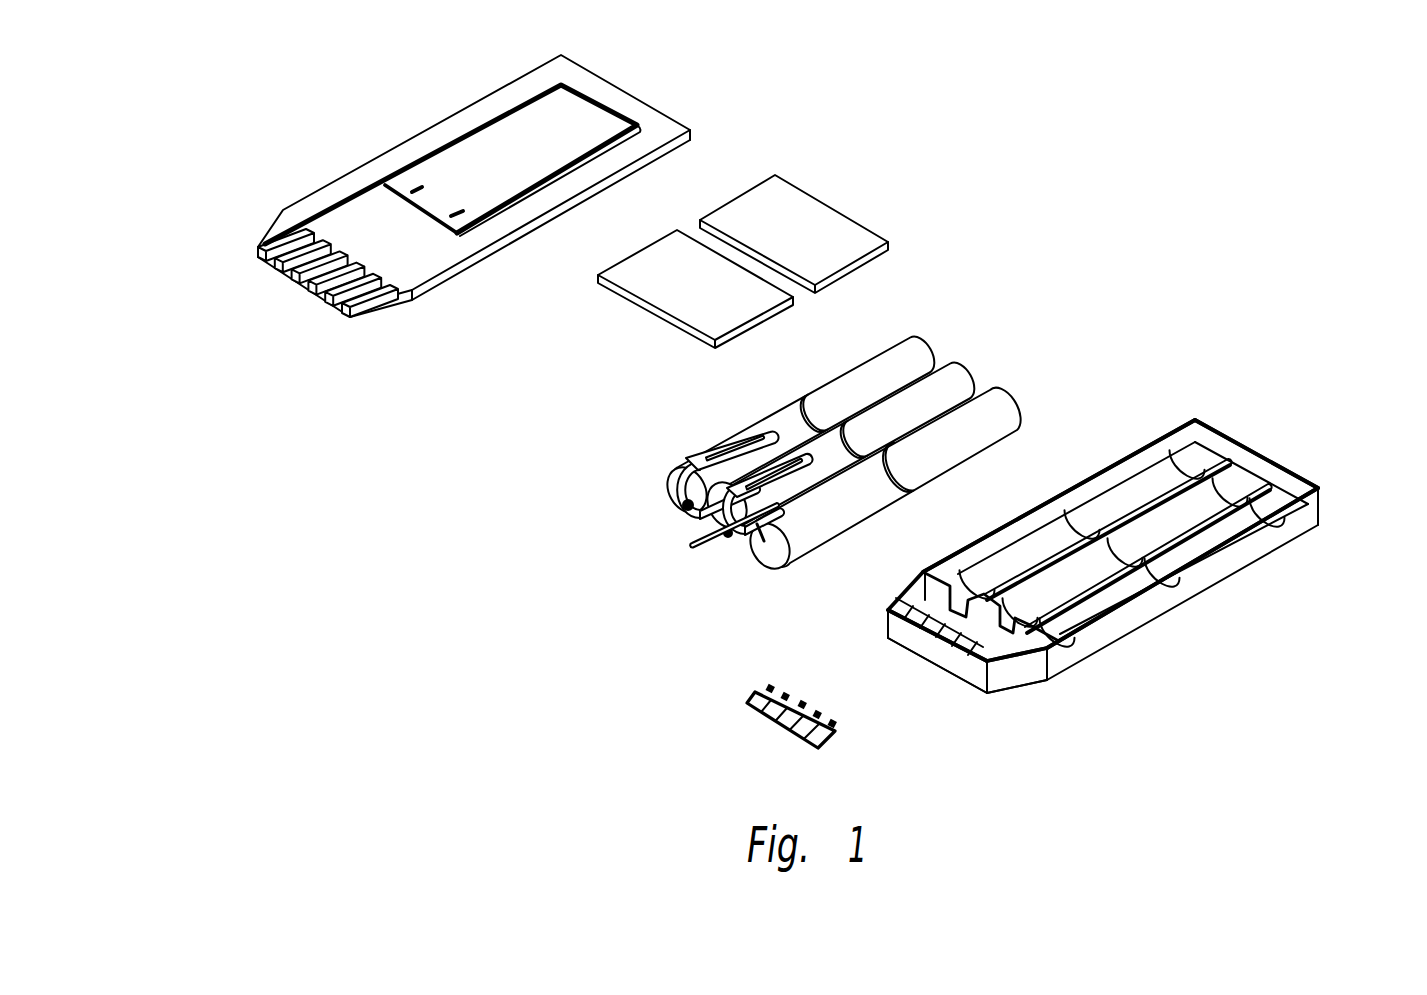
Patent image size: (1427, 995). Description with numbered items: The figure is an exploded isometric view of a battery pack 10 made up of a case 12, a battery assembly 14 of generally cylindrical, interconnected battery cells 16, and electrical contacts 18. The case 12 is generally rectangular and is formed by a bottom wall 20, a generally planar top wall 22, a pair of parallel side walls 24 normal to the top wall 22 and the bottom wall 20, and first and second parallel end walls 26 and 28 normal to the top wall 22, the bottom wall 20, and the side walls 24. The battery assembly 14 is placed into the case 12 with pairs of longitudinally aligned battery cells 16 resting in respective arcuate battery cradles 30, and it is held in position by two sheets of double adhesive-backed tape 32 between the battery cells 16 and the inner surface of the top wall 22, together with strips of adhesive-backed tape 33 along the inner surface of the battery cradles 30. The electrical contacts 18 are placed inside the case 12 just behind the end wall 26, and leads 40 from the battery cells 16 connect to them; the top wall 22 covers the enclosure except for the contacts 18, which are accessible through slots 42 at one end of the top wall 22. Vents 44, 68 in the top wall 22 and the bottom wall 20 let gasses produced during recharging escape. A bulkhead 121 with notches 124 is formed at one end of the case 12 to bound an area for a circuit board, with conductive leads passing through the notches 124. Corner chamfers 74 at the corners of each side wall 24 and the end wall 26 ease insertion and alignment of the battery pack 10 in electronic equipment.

The battery pack 10 is at (271, 612).
The case 12 is at (1316, 577).
The battery assembly 14 is at (968, 345).
The battery cells 16 is at (773, 432).
The electrical contacts 18 is at (768, 720).
The bottom wall 20 is at (1067, 537).
The top wall 22 is at (558, 151).
The side walls 24 is at (1122, 468).
The first end wall 26 is at (960, 670).
The second end wall 28 is at (1230, 452).
The battery cradles 30 is at (1023, 533).
The double adhesive-backed tape 32 is at (808, 190).
The strips of adhesive-backed tape 33 is at (1015, 585).
The leads 40 is at (690, 497).
The slots 42 is at (344, 311).
The vents 44 is at (456, 212).
The vents 68 is at (1095, 505).
The corner chamfers 74 is at (1010, 677).
The bulkhead 121 is at (937, 591).
The notches 124 is at (938, 608).